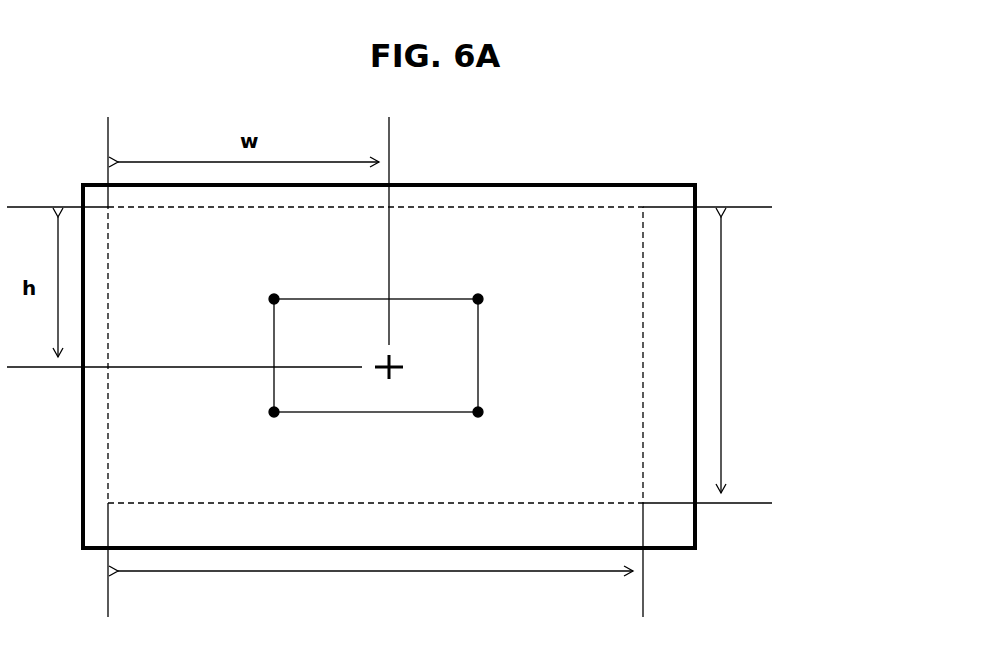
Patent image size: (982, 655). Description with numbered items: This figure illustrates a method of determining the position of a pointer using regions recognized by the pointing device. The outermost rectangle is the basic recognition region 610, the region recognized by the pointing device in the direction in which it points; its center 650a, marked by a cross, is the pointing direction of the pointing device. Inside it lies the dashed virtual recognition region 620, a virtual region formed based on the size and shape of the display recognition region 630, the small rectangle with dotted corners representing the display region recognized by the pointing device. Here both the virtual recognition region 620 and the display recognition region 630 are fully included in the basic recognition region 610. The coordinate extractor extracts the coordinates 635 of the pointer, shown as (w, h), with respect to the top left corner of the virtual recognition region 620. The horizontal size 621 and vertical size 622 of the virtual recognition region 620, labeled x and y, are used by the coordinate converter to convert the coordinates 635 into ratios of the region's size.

The basic recognition region 610 is at (650, 185).
The virtual recognition region 620 is at (552, 207).
The horizontal size 621 is at (390, 593).
The vertical size 622 is at (758, 358).
The display recognition region 630 is at (434, 299).
The coordinates of the pointer 635 is at (425, 398).
The center of the basic recognition region 650a is at (405, 353).